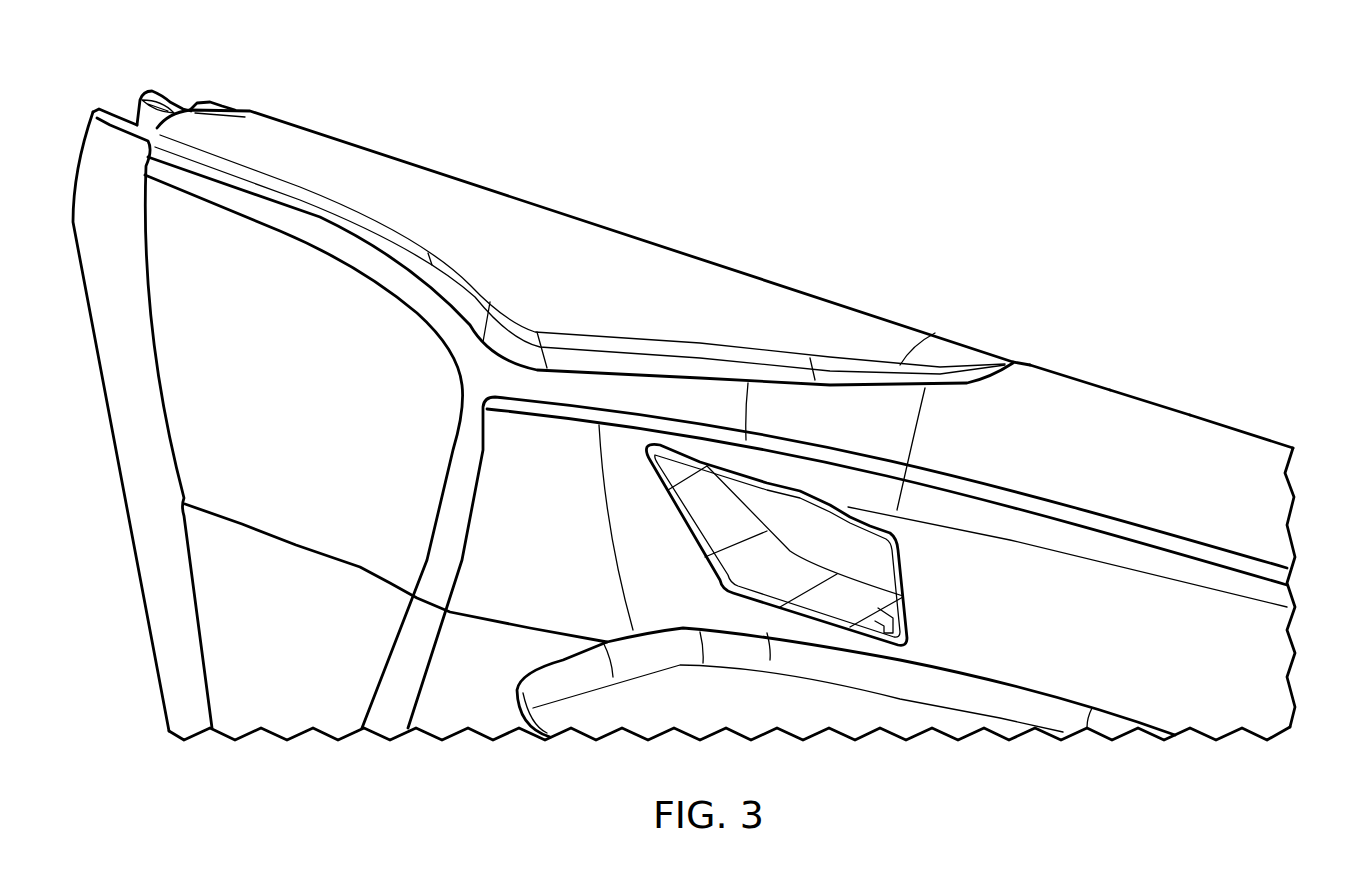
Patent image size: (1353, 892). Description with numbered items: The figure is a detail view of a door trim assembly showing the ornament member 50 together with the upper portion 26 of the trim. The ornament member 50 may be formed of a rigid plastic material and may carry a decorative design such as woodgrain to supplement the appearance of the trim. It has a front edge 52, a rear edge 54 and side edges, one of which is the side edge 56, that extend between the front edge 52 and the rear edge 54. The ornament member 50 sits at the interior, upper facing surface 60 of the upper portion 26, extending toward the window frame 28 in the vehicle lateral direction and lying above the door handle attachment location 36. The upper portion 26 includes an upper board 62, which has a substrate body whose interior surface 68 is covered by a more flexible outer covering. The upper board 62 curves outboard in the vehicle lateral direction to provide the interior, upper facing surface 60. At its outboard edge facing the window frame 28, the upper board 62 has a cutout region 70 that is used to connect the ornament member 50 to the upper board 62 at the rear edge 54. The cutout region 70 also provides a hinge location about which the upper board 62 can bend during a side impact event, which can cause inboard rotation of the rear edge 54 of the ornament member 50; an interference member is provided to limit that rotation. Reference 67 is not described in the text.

The upper portion 26 is at (1137, 390).
The window frame 28 is at (1060, 367).
The door handle attachment location 36 is at (915, 613).
The ornament member 50 is at (668, 194).
The front edge 52 is at (185, 140).
The rear edge 54 is at (963, 368).
The side edge 56 is at (858, 467).
The interior, upper facing surface 60 is at (1182, 408).
The upper board 62 is at (1252, 455).
The door outer panel 67 is at (1248, 680).
The interior surface 68 is at (903, 320).
The cutout region 70 is at (1020, 352).